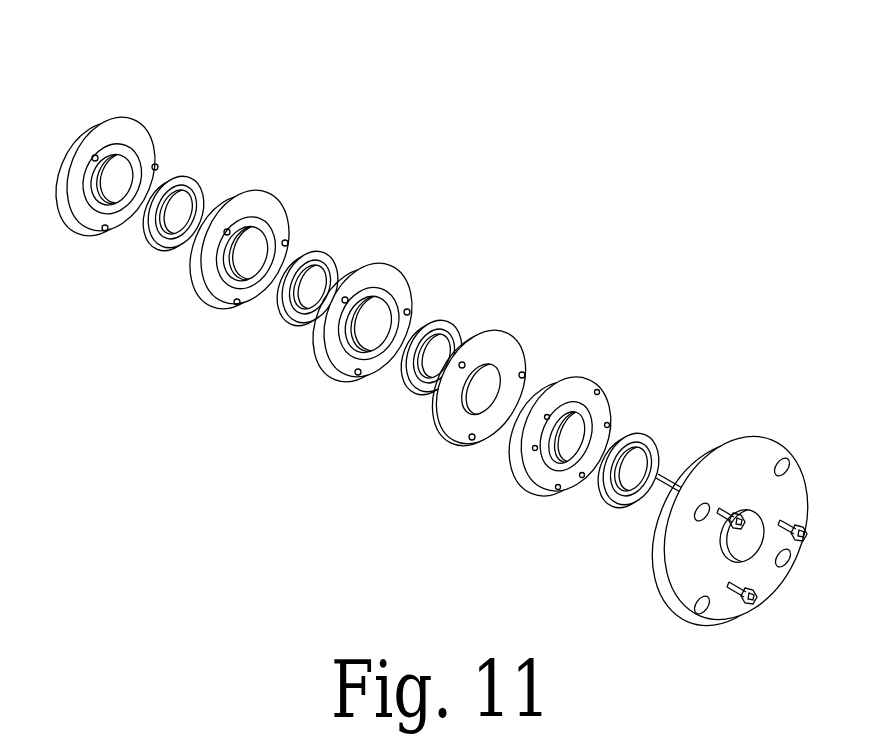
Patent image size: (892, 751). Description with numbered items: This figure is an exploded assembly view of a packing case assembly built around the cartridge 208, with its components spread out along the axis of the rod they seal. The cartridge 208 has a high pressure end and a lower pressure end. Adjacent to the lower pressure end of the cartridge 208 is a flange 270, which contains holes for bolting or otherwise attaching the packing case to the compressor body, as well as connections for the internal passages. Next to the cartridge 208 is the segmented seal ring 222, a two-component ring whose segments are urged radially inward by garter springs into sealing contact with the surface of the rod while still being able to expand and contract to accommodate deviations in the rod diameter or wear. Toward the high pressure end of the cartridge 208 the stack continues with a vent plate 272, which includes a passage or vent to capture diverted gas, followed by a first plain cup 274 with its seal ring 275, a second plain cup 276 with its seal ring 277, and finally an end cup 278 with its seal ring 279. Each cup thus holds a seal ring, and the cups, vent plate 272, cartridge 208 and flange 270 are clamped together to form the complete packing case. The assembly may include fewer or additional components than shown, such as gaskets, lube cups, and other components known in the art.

The cartridge 208 is at (582, 400).
The segmented seal ring 222 is at (643, 437).
The flange 270 is at (748, 460).
The vent plate 272 is at (498, 338).
The first plain cup 274 is at (373, 273).
The seal ring 275 is at (455, 337).
The second plain cup 276 is at (267, 213).
The seal ring 277 is at (322, 260).
The end cup 278 is at (102, 128).
The seal ring 279 is at (185, 183).